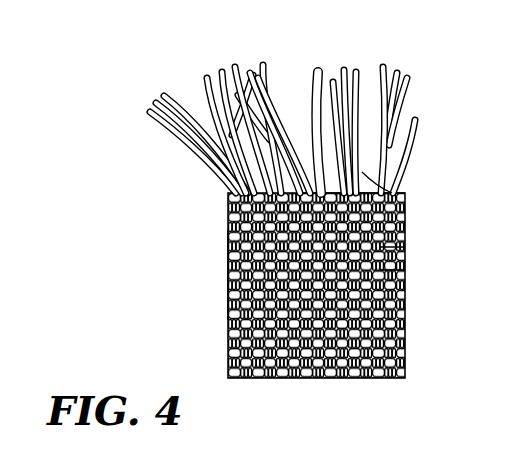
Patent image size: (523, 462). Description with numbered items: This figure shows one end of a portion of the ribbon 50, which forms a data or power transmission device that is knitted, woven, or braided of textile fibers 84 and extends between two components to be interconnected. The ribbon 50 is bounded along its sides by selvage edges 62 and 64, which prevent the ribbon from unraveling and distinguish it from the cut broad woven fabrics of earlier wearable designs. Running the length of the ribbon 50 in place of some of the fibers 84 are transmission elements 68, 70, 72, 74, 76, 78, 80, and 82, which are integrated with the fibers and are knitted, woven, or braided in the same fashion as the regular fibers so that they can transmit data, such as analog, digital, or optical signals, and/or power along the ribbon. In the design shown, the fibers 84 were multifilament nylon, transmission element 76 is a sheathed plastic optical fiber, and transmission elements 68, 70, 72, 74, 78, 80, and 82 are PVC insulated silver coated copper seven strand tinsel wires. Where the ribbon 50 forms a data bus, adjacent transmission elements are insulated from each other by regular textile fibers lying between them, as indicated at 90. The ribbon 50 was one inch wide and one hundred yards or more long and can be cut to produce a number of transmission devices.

The ribbon 50 is at (198, 344).
The selvage edge 62 is at (405, 320).
The selvage edge 64 is at (228, 273).
The transmission element 68 is at (196, 150).
The transmission element 70 is at (237, 147).
The transmission element 72 is at (267, 138).
The transmission element 74 is at (289, 160).
The optical fiber transmission element 76 is at (313, 67).
The transmission element 78 is at (360, 120).
The transmission element 80 is at (382, 148).
The transmission element 82 is at (398, 172).
The textile fibers 84 is at (403, 270).
The regular textile fibers between transmission elements 90 is at (395, 196).